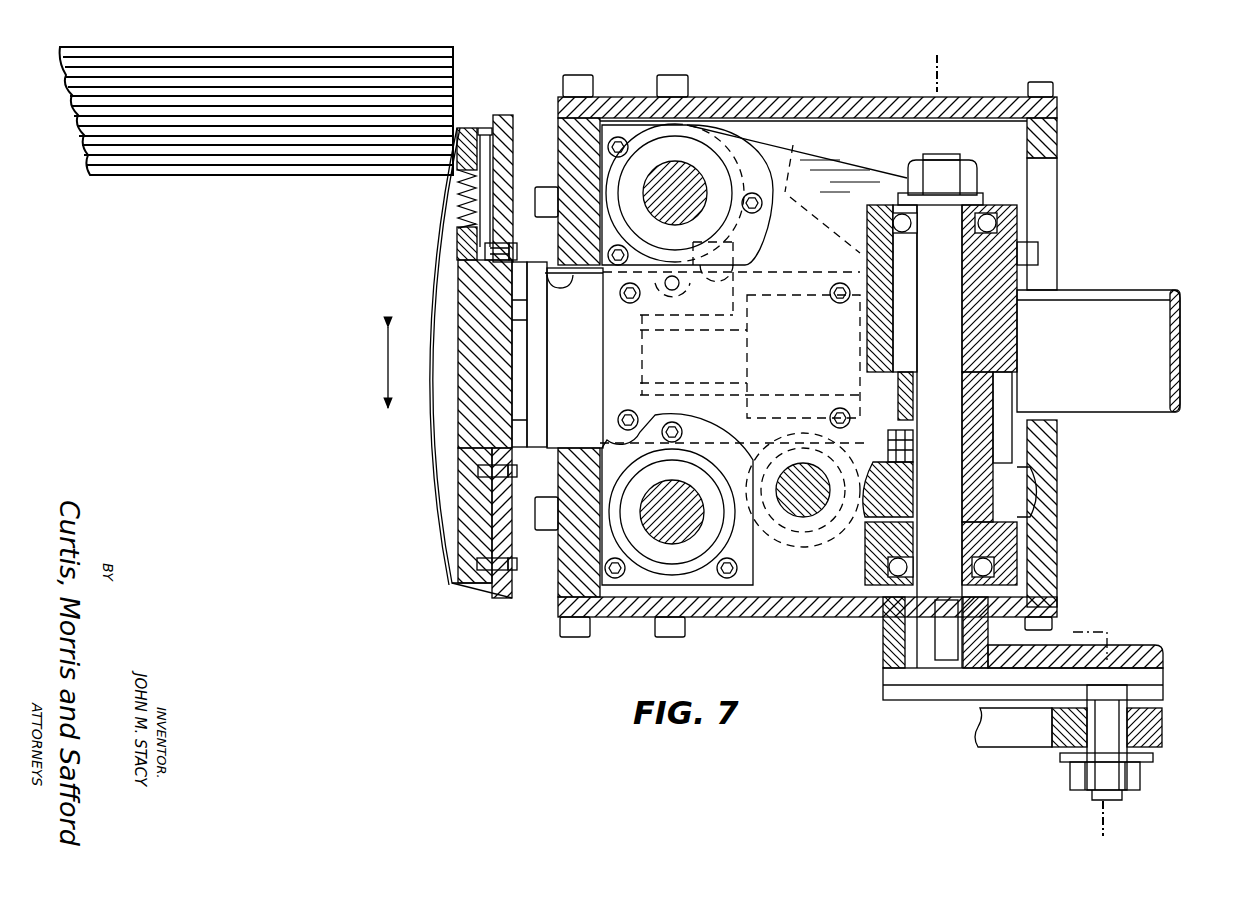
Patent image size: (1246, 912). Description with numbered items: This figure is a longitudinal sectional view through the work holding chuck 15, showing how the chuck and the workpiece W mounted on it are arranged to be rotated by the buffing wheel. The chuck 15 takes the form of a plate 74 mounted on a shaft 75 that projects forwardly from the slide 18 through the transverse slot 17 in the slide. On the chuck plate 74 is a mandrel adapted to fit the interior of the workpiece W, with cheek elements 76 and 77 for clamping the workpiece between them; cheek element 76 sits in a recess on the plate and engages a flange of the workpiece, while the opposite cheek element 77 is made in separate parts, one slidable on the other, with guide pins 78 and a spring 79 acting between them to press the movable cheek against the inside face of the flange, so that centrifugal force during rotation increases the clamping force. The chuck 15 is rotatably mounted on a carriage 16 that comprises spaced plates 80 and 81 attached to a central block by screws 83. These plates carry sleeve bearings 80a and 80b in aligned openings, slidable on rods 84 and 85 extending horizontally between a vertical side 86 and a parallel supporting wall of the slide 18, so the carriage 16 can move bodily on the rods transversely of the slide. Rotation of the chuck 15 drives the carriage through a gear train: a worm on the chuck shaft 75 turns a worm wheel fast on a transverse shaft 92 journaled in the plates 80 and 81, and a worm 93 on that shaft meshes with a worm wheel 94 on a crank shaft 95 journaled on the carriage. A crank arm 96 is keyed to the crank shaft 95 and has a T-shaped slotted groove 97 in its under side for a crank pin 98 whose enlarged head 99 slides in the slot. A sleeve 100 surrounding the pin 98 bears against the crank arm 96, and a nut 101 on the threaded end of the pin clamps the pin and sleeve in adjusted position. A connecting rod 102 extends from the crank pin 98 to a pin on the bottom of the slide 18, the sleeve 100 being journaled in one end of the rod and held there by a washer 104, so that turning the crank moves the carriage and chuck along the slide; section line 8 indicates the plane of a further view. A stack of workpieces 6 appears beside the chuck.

The stack of sheets 6 is at (200, 163).
The section line 8- 8 is at (939, 70).
The chuck 15 is at (498, 604).
The carriage 16 is at (888, 167).
The transverse slot 17 is at (552, 272).
The slide 18 is at (1020, 84).
The plate 74 is at (463, 423).
The shaft 75 is at (532, 350).
The cheek element 76 is at (478, 586).
The cheek element 77 is at (460, 172).
The guide pins 78 is at (490, 206).
The spring 79 is at (468, 160).
The plate 80 is at (842, 180).
The sleeve bearing 80a is at (704, 153).
The sleeve bearing 80b is at (690, 568).
The plate 81 is at (822, 189).
The screws 83 is at (842, 303).
The rod 84 is at (690, 210).
The rod 85 is at (692, 522).
The vertical side 86 is at (818, 128).
The transverse shaft 92 is at (803, 463).
The worm 93 is at (803, 507).
The worm wheel 94 is at (1031, 497).
The crank shaft 95 is at (948, 514).
The crank arm 96 is at (935, 690).
The T-shaped slotted groove 97 is at (889, 682).
The crank pin 98 is at (1117, 691).
The enlarged head 99 is at (1105, 660).
The sleeve 100 is at (1085, 727).
The nut 101 is at (1142, 777).
The connecting rod 102 is at (995, 750).
The washer 104 is at (1062, 758).
The workpiece W is at (433, 310).